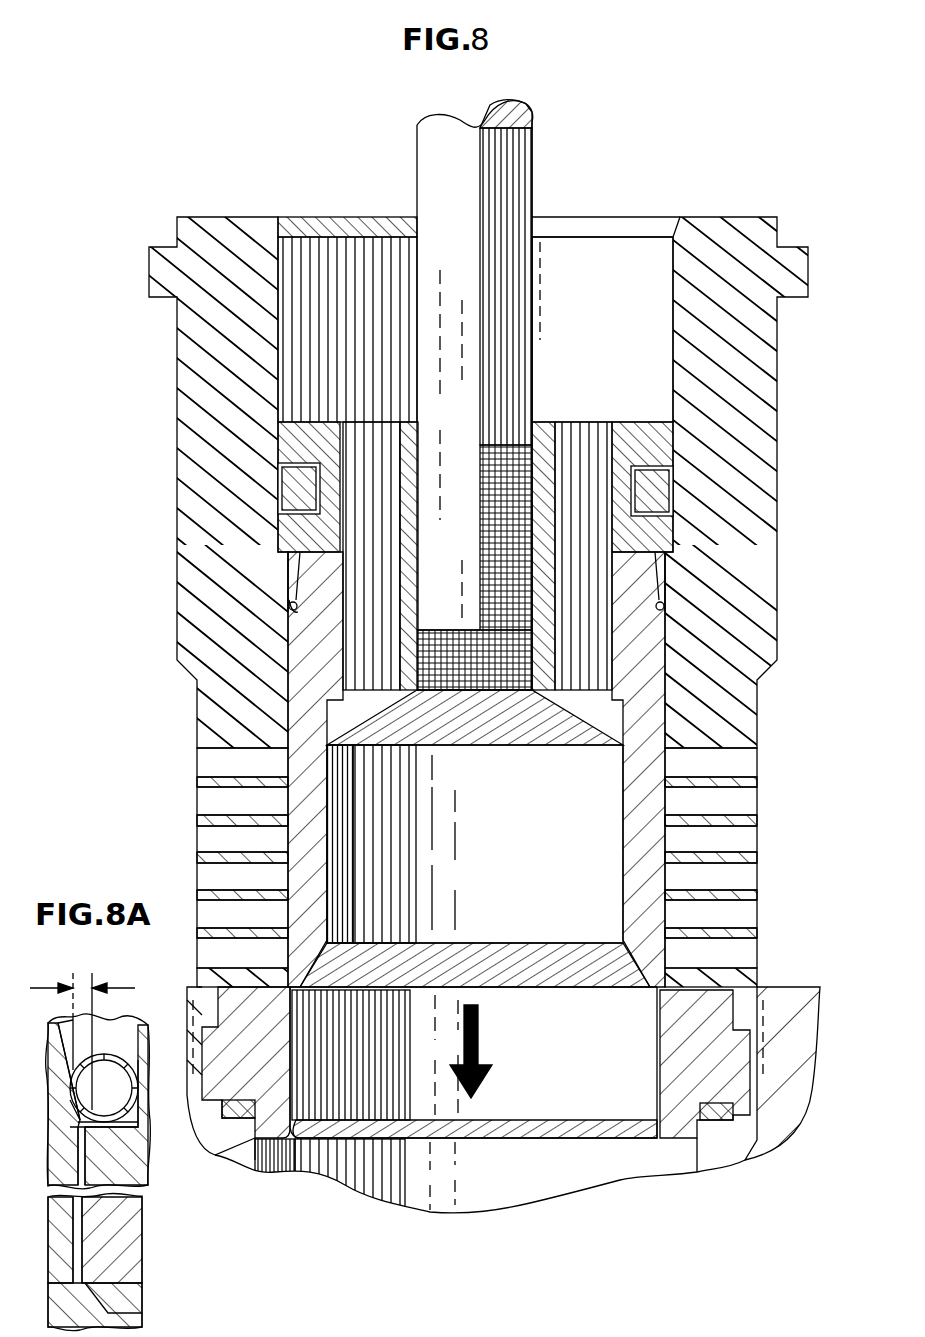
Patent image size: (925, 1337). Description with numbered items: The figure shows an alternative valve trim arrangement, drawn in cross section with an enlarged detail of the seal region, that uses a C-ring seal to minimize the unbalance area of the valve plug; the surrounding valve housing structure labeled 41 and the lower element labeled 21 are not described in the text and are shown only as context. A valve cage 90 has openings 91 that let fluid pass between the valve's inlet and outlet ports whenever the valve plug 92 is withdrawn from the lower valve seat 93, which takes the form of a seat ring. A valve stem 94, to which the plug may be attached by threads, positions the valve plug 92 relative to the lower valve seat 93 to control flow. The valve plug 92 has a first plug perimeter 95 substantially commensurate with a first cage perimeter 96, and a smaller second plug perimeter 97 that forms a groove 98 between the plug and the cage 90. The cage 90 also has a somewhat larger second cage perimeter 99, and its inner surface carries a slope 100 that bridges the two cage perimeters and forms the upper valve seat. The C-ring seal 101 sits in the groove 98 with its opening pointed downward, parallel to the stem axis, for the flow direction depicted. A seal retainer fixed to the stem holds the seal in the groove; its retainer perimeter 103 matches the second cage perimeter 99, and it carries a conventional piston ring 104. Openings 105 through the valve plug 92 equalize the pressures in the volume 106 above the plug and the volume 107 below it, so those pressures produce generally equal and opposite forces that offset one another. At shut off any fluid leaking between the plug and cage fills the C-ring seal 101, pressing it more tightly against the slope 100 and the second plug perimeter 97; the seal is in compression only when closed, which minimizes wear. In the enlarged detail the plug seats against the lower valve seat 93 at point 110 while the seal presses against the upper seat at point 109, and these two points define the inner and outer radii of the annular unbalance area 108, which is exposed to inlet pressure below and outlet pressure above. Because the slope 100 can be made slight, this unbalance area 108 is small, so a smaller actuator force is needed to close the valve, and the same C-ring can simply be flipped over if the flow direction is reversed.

In FIG. 8, the retaining ring 21 is at (726, 1125).
In FIG. 8, the housing 41 is at (805, 1020).
In FIG. 8, the valve cage 90 is at (760, 500).
In FIG. 8A, the valve cage 90 is at (60, 1050).
In FIG. 8, the openings 91 is at (748, 800).
In FIG. 8, the valve plug 92 is at (640, 880).
In FIG. 8, the lower valve seat 93 is at (738, 1065).
In FIG. 8, the valve stem 94 is at (490, 180).
In FIG. 8, the first plug perimeter 95 is at (690, 680).
In FIG. 8, the first cage perimeter 96 is at (262, 645).
In FIG. 8, the second plug perimeter 97 is at (664, 612).
In FIG. 8A, the second plug perimeter 97 is at (135, 1080).
In FIG. 8, the groove 98 is at (668, 598).
In FIG. 8, the second cage perimeter 99 is at (262, 440).
In FIG. 8, the slope 100 is at (286, 578).
In FIG. 8A, the slope 100 is at (95, 1010).
In FIG. 8, the C-ring seal 101 is at (292, 606).
In FIG. 8A, the C-ring seal 101 is at (115, 1070).
In FIG. 8, the retainer perimeter 103 is at (715, 455).
In FIG. 8, the piston ring 104 is at (278, 487).
In FIG. 8, the openings 105 is at (633, 430).
In FIG. 8, the volume 106 is at (630, 282).
In FIG. 8, the volume 107 is at (514, 1166).
In FIG. 8A, the unbalance area 108 is at (92, 975).
In FIG. 8A, the point 109 is at (78, 1118).
In FIG. 8A, the point 110 is at (95, 1262).